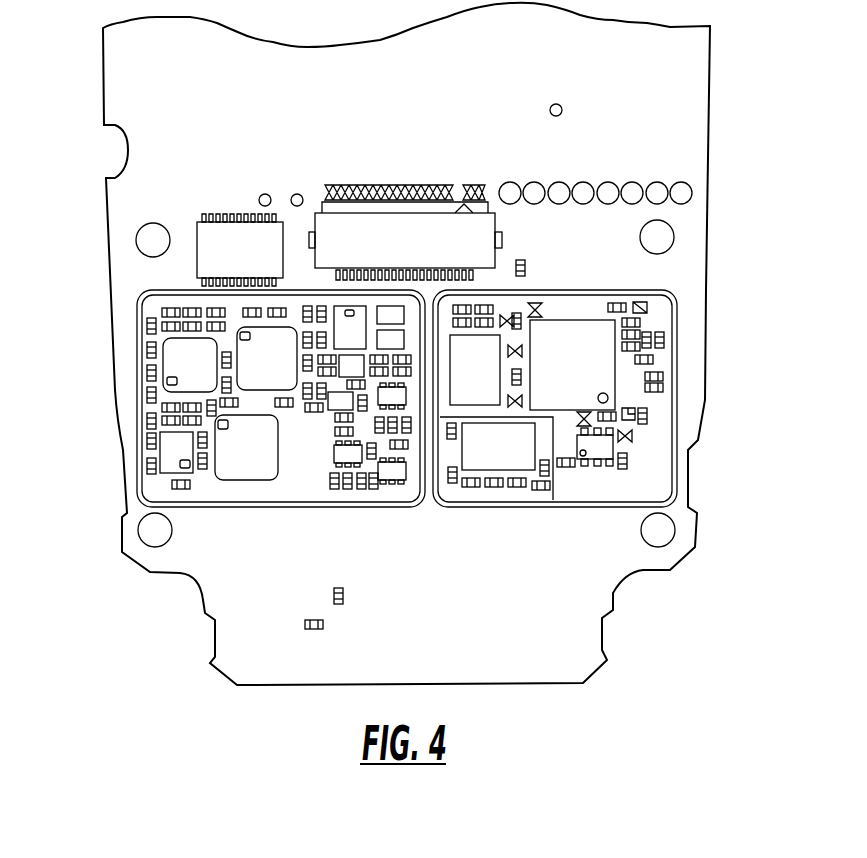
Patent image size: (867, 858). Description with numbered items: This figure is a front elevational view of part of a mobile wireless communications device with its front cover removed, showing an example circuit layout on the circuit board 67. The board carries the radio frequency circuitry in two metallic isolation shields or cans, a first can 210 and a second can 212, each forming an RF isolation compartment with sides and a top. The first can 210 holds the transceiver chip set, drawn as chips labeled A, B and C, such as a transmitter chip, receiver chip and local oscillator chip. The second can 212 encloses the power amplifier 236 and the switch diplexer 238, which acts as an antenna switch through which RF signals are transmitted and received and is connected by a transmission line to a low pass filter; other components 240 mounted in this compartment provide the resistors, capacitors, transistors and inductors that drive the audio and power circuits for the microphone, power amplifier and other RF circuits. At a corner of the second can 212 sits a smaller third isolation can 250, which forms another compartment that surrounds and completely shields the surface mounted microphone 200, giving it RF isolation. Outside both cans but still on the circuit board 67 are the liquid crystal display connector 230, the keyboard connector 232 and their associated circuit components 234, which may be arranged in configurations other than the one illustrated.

The circuit board 67 is at (713, 82).
The surface mounted microphone 200 is at (520, 473).
The first isolation shield (can) 210 is at (145, 328).
The second isolation shield (can) 212 is at (633, 441).
The liquid crystal display (LCD) connector 230 is at (482, 223).
The keyboard connector 232 is at (197, 265).
The associated circuit components 234 is at (612, 177).
The power amplifier 236 is at (603, 350).
The switch diplexer 238 is at (487, 345).
The other components 240 is at (630, 437).
The third isolation can (RF shield) 250 is at (477, 503).